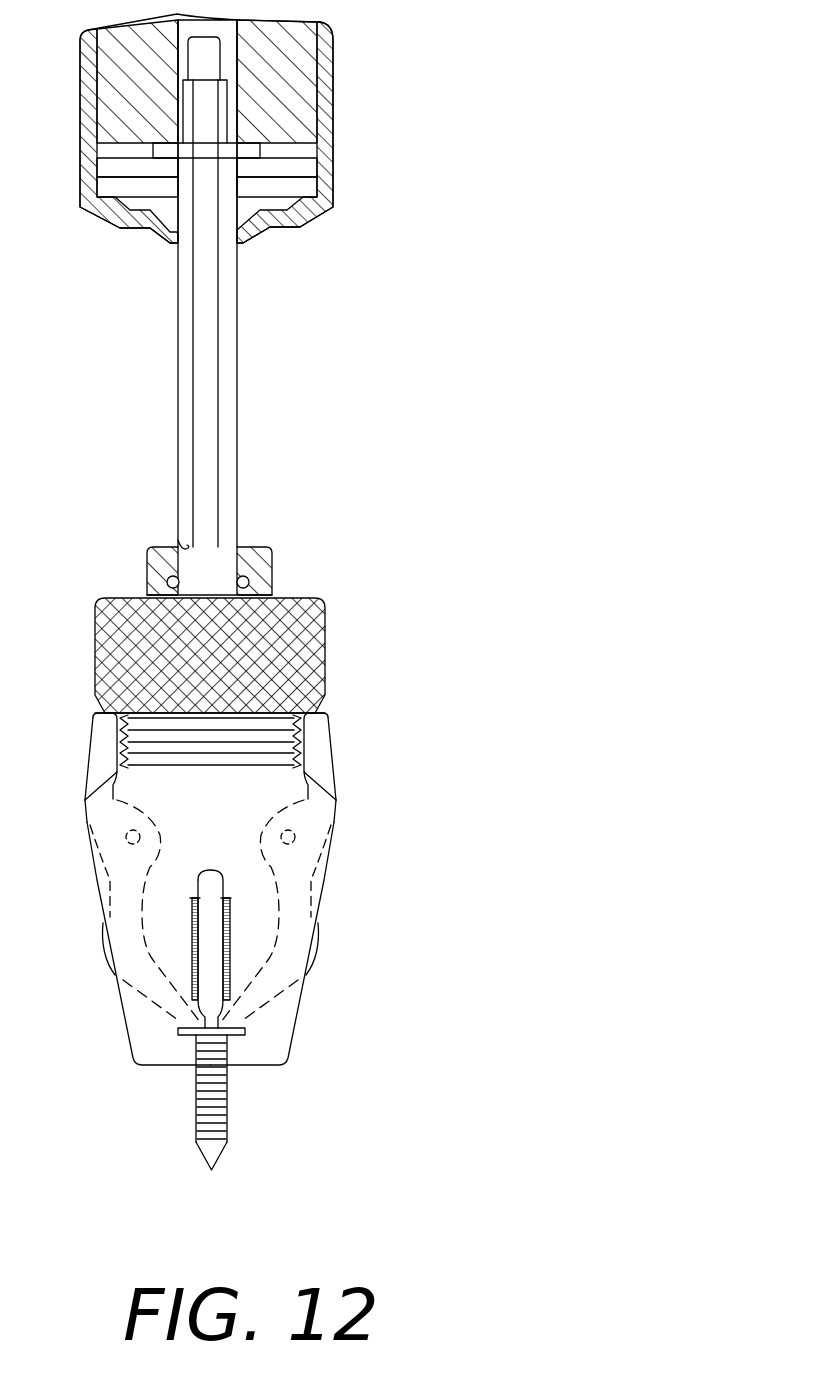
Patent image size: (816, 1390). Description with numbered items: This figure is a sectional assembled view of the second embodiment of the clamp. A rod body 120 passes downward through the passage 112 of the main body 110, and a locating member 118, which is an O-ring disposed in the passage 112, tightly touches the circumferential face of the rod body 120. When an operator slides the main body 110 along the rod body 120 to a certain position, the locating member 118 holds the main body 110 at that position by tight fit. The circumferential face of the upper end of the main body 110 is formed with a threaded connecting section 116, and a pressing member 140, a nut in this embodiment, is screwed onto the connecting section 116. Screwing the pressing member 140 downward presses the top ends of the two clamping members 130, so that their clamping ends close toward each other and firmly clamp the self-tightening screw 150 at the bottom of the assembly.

The main body 110 is at (313, 1005).
The passage 112 is at (180, 537).
The threaded connecting section 116 is at (252, 733).
The locating member 118 is at (170, 583).
The rod body 120 is at (207, 412).
The clamping members 130 is at (338, 780).
The pressing member 140 is at (325, 648).
The self-tightening screw 150 is at (217, 1108).